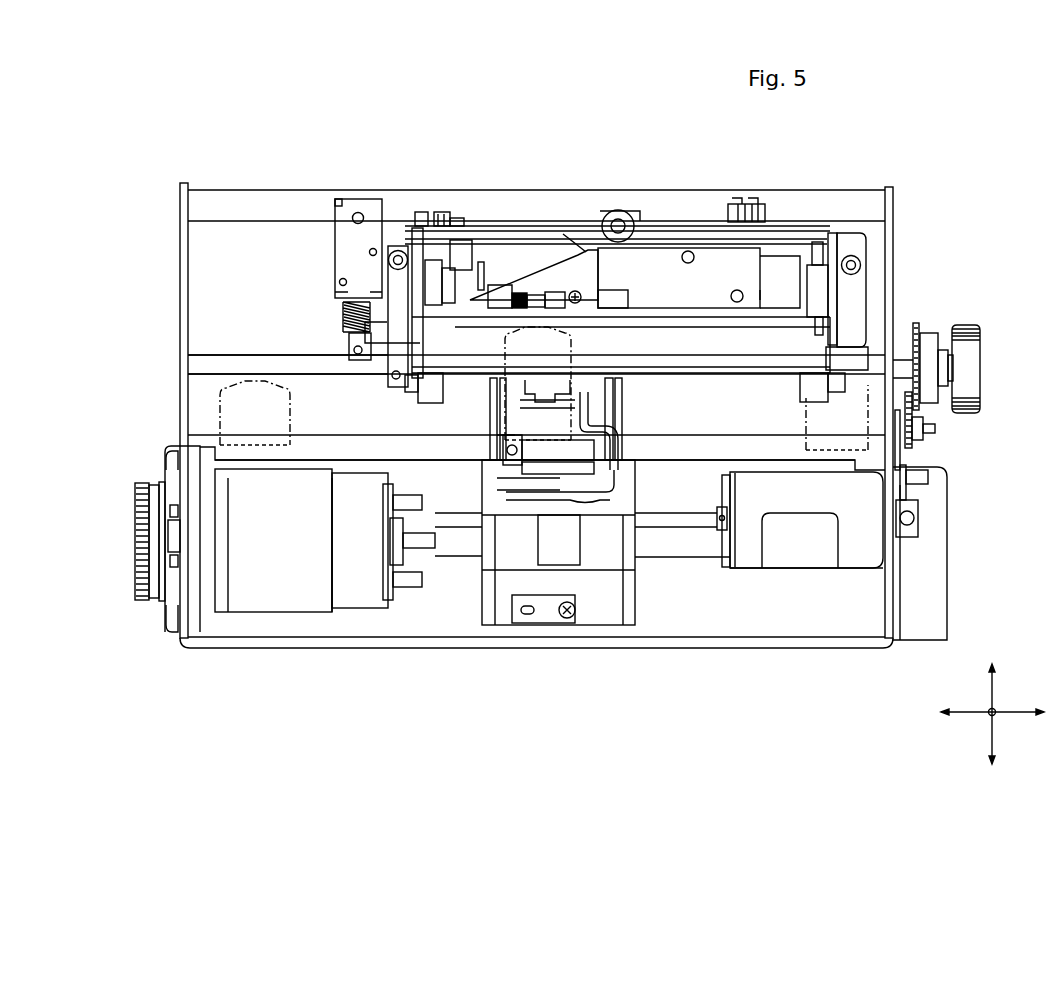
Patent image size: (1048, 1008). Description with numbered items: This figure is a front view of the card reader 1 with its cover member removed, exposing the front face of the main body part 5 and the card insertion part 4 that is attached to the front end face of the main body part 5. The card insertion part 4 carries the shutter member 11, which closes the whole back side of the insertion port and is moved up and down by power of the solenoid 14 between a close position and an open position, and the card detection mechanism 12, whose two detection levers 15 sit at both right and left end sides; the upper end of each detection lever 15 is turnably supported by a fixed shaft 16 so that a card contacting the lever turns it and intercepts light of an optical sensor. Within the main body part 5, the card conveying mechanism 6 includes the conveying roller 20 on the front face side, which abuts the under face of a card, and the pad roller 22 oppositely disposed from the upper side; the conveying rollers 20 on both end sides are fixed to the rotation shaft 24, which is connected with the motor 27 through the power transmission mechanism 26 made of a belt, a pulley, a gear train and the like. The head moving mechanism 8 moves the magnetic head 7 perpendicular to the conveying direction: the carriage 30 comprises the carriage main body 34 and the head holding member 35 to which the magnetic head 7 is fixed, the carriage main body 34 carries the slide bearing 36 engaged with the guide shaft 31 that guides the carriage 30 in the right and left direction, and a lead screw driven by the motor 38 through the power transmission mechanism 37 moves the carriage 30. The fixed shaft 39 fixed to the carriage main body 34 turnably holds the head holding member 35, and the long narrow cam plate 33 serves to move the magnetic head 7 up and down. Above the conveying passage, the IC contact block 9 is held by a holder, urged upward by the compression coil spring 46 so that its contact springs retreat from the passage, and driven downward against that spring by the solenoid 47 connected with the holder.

The card reader 1 is at (918, 158).
The card insertion part 4 is at (875, 251).
The main body part 5 is at (168, 316).
The card conveying mechanism 6 is at (955, 304).
The magnetic head 7 is at (200, 415).
The head moving mechanism 8 is at (442, 624).
The IC contact block 9 is at (474, 300).
The shutter member 11 is at (688, 374).
The card detection mechanism 12 is at (333, 316).
The solenoid 14 is at (336, 230).
The detection lever 15 is at (384, 280).
The fixed shaft 16 is at (386, 262).
The conveying roller 20 is at (428, 402).
The pad roller 22 is at (432, 265).
The rotation shaft 24 is at (329, 376).
The power transmission mechanism 26 is at (956, 457).
The motor 27 is at (742, 568).
The carriage 30 is at (594, 501).
The guide shaft 31 is at (452, 522).
The cam plate 33 is at (444, 460).
The carriage main body 34 is at (638, 492).
The head holding member 35 is at (575, 384).
The slide bearing 36 is at (570, 568).
The power transmission mechanism 37 is at (120, 494).
The motor 38 is at (268, 612).
The fixed shaft 39 is at (585, 442).
The compression coil spring 46 is at (508, 303).
The solenoid 47 is at (686, 250).